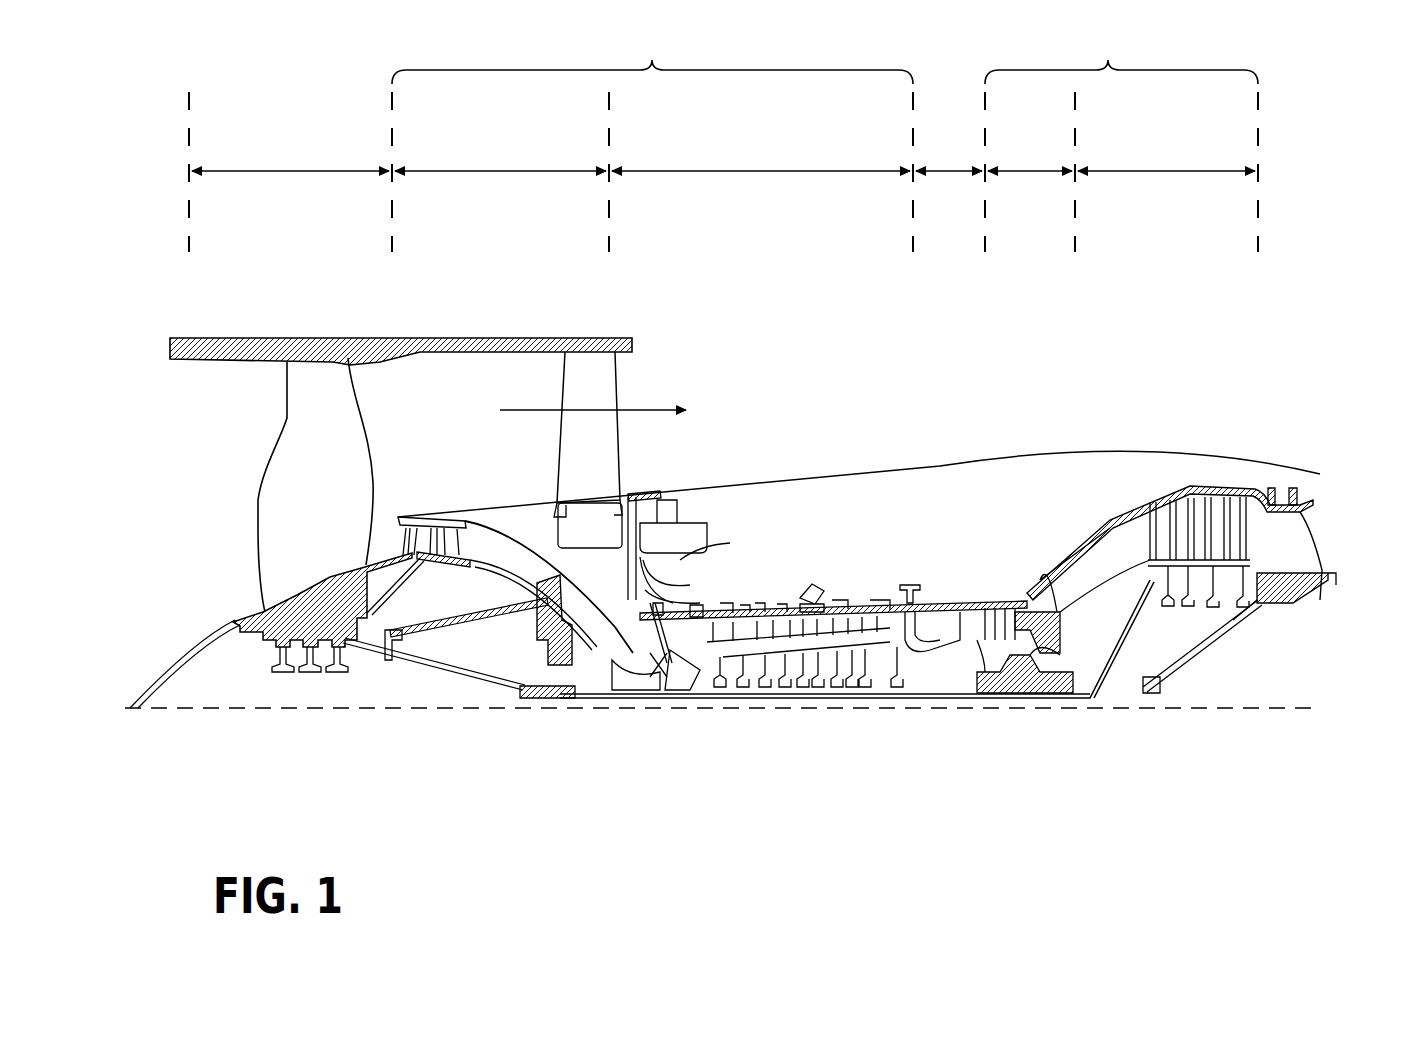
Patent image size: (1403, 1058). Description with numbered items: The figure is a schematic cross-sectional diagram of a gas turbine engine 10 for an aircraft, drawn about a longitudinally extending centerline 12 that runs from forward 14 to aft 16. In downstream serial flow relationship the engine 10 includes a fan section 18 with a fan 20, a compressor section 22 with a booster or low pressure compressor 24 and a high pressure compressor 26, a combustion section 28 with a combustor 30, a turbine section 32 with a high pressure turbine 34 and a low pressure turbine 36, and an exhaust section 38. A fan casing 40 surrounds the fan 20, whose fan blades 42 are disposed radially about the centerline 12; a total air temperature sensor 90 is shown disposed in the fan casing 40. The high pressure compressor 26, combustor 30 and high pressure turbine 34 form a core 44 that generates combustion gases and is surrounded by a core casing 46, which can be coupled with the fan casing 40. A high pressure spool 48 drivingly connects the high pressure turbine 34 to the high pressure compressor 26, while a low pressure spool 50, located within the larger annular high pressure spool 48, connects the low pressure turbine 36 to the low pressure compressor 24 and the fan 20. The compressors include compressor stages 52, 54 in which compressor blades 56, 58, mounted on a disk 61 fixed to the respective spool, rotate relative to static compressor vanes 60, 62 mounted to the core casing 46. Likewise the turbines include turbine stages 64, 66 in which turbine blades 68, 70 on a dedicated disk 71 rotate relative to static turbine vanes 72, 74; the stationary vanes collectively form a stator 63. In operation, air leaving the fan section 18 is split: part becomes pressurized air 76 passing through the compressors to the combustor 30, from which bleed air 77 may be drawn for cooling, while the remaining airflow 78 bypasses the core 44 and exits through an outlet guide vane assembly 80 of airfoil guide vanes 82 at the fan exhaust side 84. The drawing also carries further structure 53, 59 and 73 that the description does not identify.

The gas turbine engine 10 is at (944, 328).
The centerline 12 is at (289, 712).
The forward 14 is at (162, 474).
The aft 16 is at (1374, 557).
The fan section 18 is at (289, 172).
The fan 20 is at (222, 548).
The compressor section 22 is at (652, 57).
The low pressure compressor 24 is at (499, 172).
The high pressure compressor 26 is at (759, 172).
The combustion section 28 is at (947, 172).
The combustor 30 is at (950, 597).
The turbine section 32 is at (1121, 57).
The high pressure turbine 34 is at (1028, 172).
The low pressure turbine 36 is at (1166, 172).
The exhaust section 38 is at (1336, 513).
The fan casing 40 is at (431, 338).
The fan blades 42 is at (346, 415).
The core 44 is at (893, 510).
The core casing 46 is at (1126, 525).
The high pressure spool 48 is at (905, 690).
The low pressure spool 50 is at (536, 700).
The compressor stage 52 is at (453, 458).
The frame strut 53 is at (487, 572).
The compressor stage 54 is at (745, 505).
The compressor blades 56 is at (428, 525).
The compressor blades 58 is at (683, 596).
The flow path wall 59 is at (426, 560).
The static compressor vanes 60 is at (409, 525).
The disk 61 is at (682, 672).
The static compressor vanes 62 is at (672, 590).
The stator 63 is at (1189, 492).
The turbine stage 64 is at (983, 516).
The turbine stage 66 is at (1240, 390).
The turbine blades 68 is at (1000, 592).
The turbine blades 70 is at (1241, 510).
The disk 71 is at (1003, 690).
The static turbine vanes 72 is at (978, 592).
The exhaust cone 73 is at (1256, 603).
The static turbine vanes 74 is at (1225, 510).
The pressurized air 76 is at (607, 620).
The bleed air 77 is at (774, 590).
The airflow 78 is at (523, 410).
The outlet guide vane assembly 80 is at (635, 460).
The airfoil guide vanes 82 is at (558, 452).
The fan exhaust side 84 is at (662, 365).
The total air temperature sensor 90 is at (625, 700).